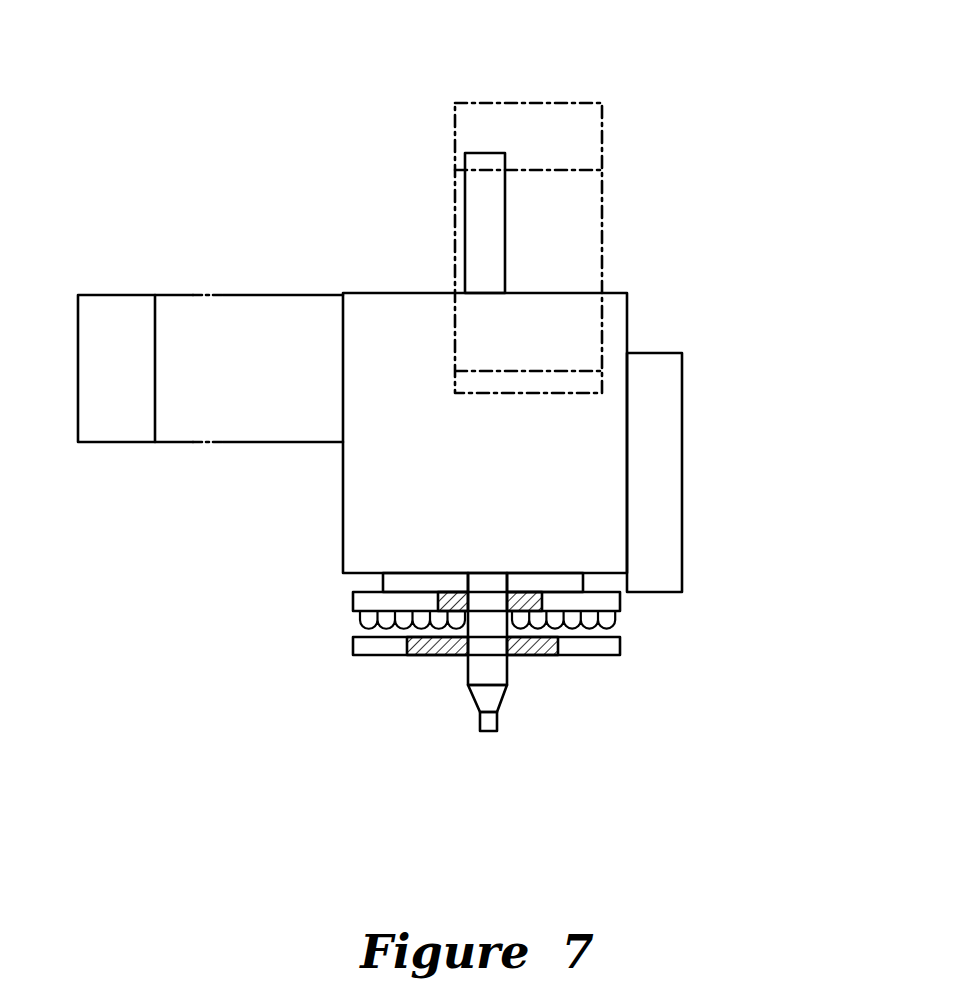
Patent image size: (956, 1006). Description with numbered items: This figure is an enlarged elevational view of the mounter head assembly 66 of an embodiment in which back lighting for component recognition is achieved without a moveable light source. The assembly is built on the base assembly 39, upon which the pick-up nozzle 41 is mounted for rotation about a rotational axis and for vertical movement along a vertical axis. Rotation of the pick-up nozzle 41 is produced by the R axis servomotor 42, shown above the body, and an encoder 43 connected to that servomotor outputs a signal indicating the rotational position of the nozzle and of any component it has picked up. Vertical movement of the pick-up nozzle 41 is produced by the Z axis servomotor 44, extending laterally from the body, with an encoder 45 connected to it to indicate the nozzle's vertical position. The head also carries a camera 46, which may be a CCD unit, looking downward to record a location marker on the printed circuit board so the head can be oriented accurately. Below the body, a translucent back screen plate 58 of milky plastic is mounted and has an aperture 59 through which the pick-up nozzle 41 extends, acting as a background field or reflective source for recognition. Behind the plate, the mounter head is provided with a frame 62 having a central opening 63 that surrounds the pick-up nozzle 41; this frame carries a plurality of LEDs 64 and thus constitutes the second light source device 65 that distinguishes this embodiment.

The base assembly 39 is at (353, 478).
The pick-up nozzle 41 is at (510, 665).
The R axis servomotor 42 is at (588, 192).
The encoder 43 is at (578, 110).
The Z axis servomotor 44 is at (268, 305).
The encoder 45 is at (113, 307).
The camera 46 is at (668, 379).
The back screen plate 58 is at (372, 650).
The aperture 59 is at (467, 657).
The frame 62 is at (360, 603).
The central opening 63 is at (508, 590).
The LEDs 64 is at (613, 617).
The second light source device 65 is at (243, 630).
The mounter head assembly 66 is at (747, 247).